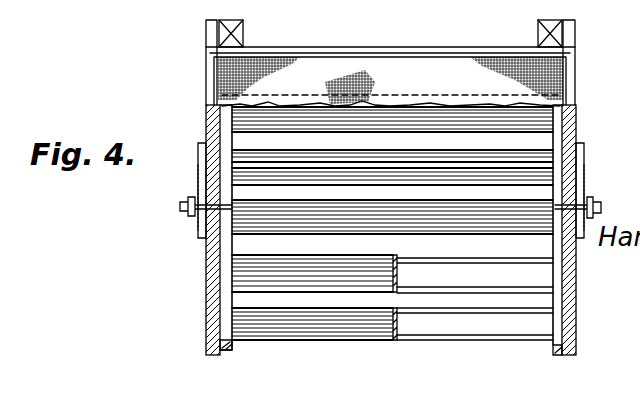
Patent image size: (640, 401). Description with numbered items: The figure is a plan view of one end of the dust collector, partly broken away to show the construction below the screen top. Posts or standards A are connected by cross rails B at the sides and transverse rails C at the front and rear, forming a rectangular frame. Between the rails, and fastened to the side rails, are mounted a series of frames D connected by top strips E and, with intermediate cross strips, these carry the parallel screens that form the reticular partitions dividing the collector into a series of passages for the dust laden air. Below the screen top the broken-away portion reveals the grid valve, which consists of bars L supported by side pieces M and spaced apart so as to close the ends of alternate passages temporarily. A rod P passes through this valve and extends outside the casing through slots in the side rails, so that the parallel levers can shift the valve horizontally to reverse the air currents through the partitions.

The posts A is at (244, 27).
The cross rails B is at (579, 141).
The transverse rails C is at (370, 49).
The frames D is at (556, 325).
The top strips E is at (510, 256).
The bars L is at (410, 227).
The side pieces M is at (233, 243).
The rod P is at (176, 211).